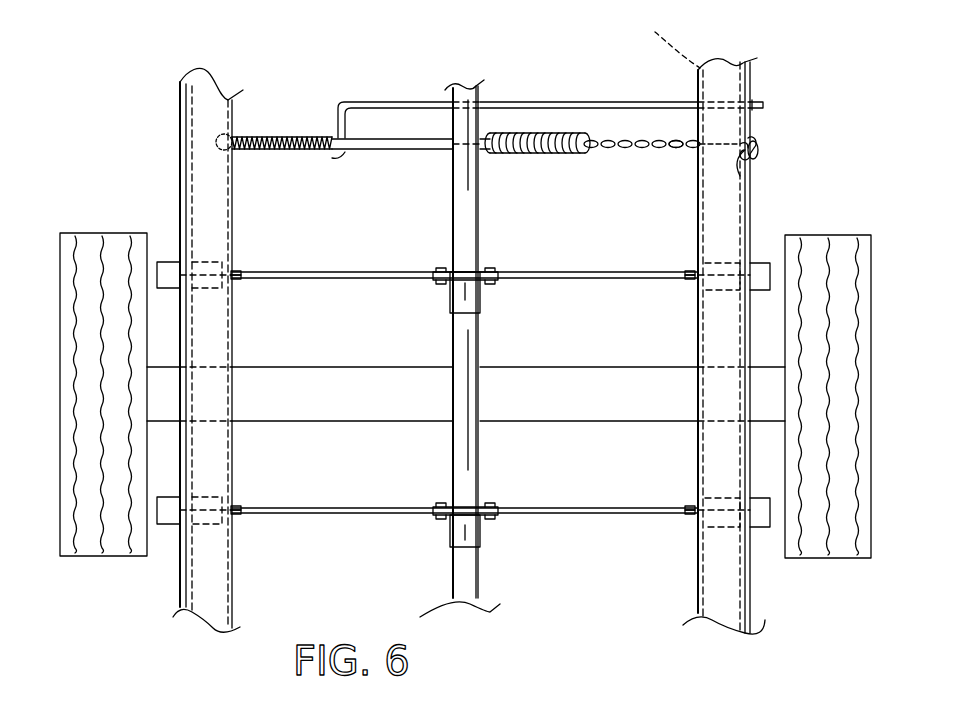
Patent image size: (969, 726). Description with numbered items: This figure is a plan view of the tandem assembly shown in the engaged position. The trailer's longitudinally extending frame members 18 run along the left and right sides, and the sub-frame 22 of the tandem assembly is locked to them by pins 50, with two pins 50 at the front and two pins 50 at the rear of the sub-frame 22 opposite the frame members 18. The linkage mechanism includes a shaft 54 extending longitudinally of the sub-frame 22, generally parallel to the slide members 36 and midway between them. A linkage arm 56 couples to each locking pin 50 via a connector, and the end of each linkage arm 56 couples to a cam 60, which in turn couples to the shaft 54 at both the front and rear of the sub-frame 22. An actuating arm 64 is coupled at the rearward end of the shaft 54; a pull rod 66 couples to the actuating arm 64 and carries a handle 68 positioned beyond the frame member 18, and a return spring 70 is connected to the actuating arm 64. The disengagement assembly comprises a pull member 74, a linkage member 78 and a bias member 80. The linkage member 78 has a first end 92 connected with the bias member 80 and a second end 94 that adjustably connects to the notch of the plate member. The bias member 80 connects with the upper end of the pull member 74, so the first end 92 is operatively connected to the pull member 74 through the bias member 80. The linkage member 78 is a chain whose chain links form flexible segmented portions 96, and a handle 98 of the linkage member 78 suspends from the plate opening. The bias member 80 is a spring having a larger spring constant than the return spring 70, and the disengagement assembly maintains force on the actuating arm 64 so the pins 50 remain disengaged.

The frame member 18 is at (698, 95).
The sub-frame 22 is at (160, 144).
The slide member 36 is at (670, 37).
The pin 50 is at (170, 512).
The shaft 54 is at (463, 207).
The linkage arm 56 is at (578, 270).
The cam 60 is at (490, 270).
The actuating arm 64 is at (367, 150).
The pull rod 66 is at (578, 100).
The handle 68 is at (765, 106).
The return spring 70 is at (282, 135).
The pull member 74 is at (390, 135).
The linkage member 78 is at (630, 150).
The bias member 80 is at (518, 137).
The first end 92 is at (585, 150).
The second end 94 is at (742, 172).
The flexible segmented portions 96 is at (668, 150).
The handle 98 is at (762, 152).